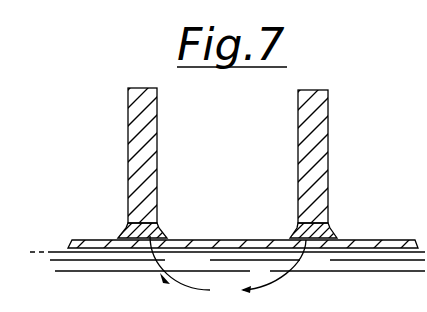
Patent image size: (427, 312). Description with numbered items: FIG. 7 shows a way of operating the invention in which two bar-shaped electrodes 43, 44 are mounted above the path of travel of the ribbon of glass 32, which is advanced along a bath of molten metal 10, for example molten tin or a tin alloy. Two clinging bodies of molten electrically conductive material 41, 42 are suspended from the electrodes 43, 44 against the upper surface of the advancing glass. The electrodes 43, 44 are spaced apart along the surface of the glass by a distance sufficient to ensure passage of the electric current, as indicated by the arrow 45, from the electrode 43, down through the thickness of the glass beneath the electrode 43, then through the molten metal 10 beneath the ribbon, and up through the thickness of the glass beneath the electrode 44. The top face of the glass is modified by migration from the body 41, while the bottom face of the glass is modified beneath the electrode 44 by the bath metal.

The bath of molten metal 10 is at (60, 253).
The ribbon of glass 32 is at (372, 240).
The clinging body of molten electrically conductive material 41 is at (125, 232).
The clinging body of molten electrically conductive material 42 is at (300, 233).
The electrode 43 is at (152, 133).
The electrode 44 is at (318, 135).
The arrow 45 is at (205, 290).